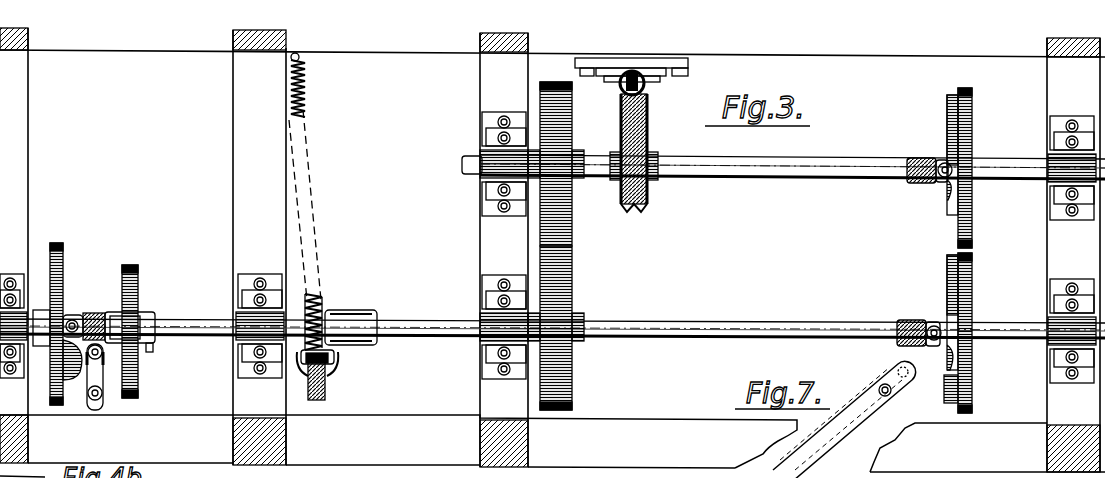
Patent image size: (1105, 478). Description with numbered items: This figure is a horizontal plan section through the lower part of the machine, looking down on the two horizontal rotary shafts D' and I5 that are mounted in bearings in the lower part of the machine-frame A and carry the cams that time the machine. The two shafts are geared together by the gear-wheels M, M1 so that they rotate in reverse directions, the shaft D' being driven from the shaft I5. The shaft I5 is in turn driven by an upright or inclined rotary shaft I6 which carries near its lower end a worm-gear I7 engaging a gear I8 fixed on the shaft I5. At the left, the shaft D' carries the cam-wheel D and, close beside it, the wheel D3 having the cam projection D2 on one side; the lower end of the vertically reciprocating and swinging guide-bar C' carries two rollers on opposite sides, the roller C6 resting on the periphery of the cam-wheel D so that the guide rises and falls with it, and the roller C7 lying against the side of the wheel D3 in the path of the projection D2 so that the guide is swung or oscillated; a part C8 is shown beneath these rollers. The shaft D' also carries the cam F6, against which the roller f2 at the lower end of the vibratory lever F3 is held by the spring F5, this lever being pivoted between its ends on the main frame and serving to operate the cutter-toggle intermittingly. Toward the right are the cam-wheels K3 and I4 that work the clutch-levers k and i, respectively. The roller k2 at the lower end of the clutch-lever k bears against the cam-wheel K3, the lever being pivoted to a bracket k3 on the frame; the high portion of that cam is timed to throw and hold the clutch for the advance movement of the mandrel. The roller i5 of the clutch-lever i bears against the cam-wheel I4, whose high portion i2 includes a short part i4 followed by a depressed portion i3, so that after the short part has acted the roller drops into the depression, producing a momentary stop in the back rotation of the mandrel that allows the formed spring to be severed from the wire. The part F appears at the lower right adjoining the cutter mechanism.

In FIG. 3, the frame A is at (552, 250).
In FIG. 3, the rotary shaft D' is at (552, 320).
In FIG. 3, the rotary shaft I5 is at (843, 157).
In FIG. 3, the wheel D3 is at (62, 252).
In FIG. 3, the cam-wheel D is at (140, 331).
In FIG. 3, the roller C7 is at (72, 318).
In FIG. 3, the guide-bar C' is at (94, 314).
In FIG. 3, the roller C6 is at (132, 312).
In FIG. 3, the cam projection D2 is at (72, 368).
In FIG. 3, the link C8 is at (99, 400).
In FIG. 3, the spring F5 is at (322, 297).
In FIG. 3, the cam F6 is at (336, 310).
In FIG. 3, the roller f2 is at (336, 362).
In FIG. 3, the vibratory lever F3 is at (326, 392).
In FIG. 3, the gear-wheel M1 is at (573, 234).
In FIG. 3, the gear-wheel M is at (573, 385).
In FIG. 3, the rotary shaft I6 is at (647, 97).
In FIG. 3, the worm-gear I7 is at (648, 112).
In FIG. 3, the gear I8 is at (647, 197).
In FIG. 3, the cam-wheel K3 is at (966, 133).
In FIG. 3, the roller k2 is at (947, 113).
In FIG. 3, the clutch-lever k is at (913, 160).
In FIG. 3, the bracket k3 is at (940, 185).
In FIG. 3, the cam-wheel I4 is at (966, 288).
In FIG. 3, the high portion i2 is at (947, 263).
In FIG. 3, the clutch-lever i is at (895, 320).
In FIG. 3, the roller i5 is at (930, 320).
In FIG. 3, the depressed portion i3 is at (953, 364).
In FIG. 3, the short part i4 is at (950, 393).
In FIG. 7, the lever F is at (844, 419).